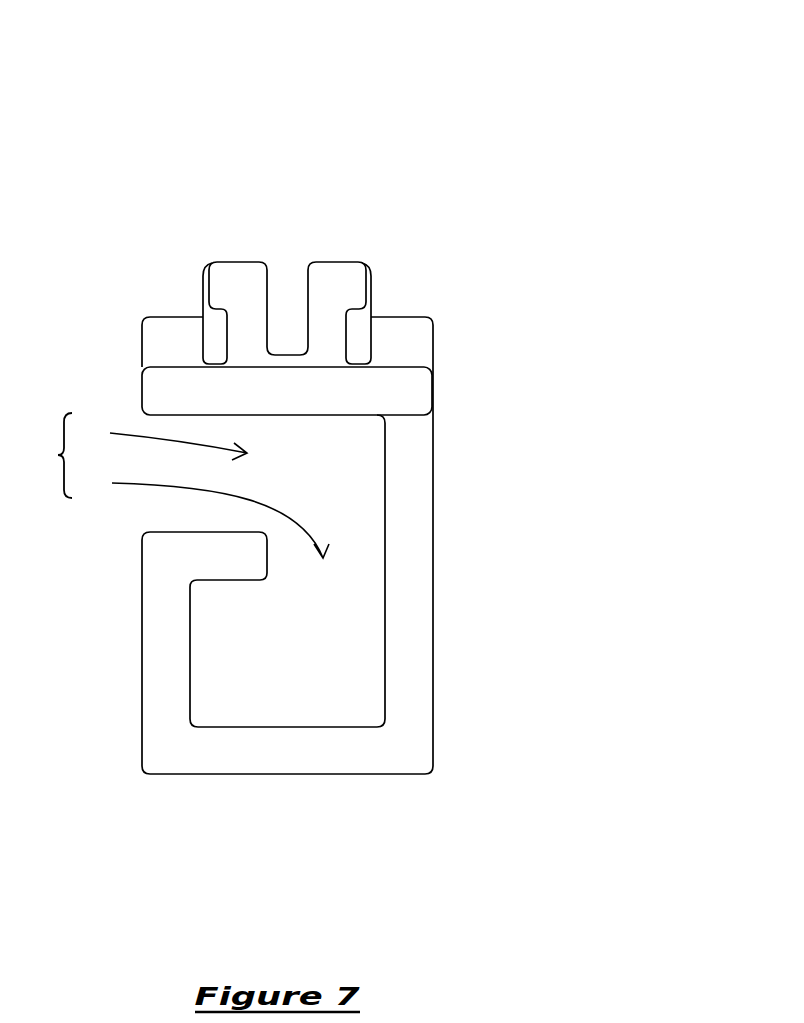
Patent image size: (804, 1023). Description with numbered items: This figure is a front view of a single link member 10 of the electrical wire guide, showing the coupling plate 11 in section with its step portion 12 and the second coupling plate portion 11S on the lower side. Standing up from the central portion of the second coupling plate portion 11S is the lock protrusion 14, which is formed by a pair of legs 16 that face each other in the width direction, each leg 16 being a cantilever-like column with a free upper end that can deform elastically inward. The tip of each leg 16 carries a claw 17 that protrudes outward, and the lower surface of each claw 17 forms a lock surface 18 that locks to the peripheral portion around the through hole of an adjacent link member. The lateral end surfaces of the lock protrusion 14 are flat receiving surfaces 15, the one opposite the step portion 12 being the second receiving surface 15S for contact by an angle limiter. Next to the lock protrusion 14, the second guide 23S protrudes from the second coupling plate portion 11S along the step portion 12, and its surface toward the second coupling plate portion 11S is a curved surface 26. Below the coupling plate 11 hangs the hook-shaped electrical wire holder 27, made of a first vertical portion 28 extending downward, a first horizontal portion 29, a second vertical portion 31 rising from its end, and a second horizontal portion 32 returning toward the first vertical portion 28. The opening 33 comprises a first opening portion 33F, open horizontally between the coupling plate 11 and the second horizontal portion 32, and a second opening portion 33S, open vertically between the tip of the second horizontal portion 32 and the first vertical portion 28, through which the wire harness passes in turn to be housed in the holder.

The link member 10 is at (290, 118).
The coupling plate 11 is at (352, 390).
The second coupling plate portion 11S is at (407, 393).
The step portion 12 is at (408, 339).
The lock protrusion 14 is at (320, 293).
The receiving surface 15 is at (237, 255).
The second receiving surface 15S is at (237, 277).
The leg 16 is at (250, 332).
The claw 17 is at (352, 300).
The lock surface 18 is at (370, 327).
The second guide 23S is at (285, 298).
The curved surface 26 is at (212, 333).
The electrical wire holder 27 is at (403, 758).
The first vertical portion 28 is at (418, 675).
The first horizontal portion 29 is at (286, 761).
The second vertical portion 31 is at (155, 658).
The second horizontal portion 32 is at (232, 550).
The opening 33 is at (48, 455).
The first opening portion 33F is at (160, 440).
The second opening portion 33S is at (201, 514).